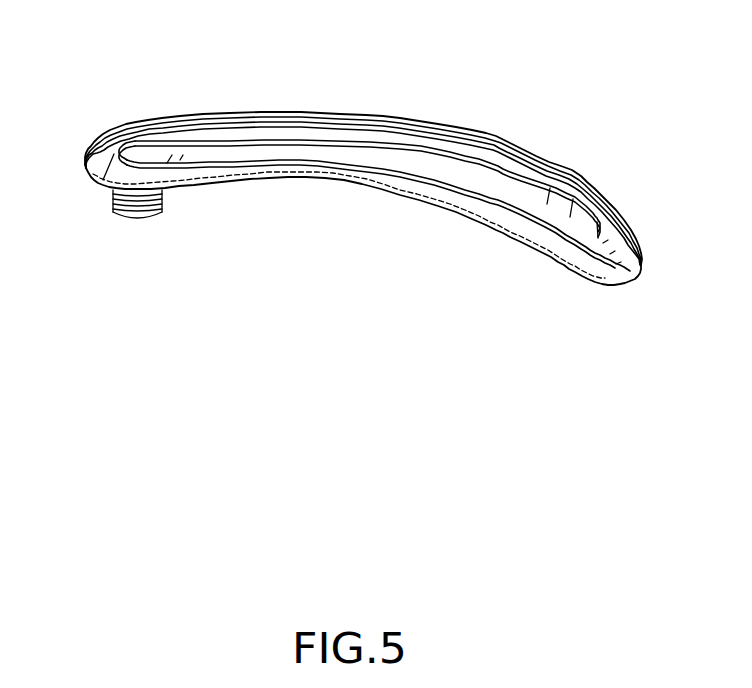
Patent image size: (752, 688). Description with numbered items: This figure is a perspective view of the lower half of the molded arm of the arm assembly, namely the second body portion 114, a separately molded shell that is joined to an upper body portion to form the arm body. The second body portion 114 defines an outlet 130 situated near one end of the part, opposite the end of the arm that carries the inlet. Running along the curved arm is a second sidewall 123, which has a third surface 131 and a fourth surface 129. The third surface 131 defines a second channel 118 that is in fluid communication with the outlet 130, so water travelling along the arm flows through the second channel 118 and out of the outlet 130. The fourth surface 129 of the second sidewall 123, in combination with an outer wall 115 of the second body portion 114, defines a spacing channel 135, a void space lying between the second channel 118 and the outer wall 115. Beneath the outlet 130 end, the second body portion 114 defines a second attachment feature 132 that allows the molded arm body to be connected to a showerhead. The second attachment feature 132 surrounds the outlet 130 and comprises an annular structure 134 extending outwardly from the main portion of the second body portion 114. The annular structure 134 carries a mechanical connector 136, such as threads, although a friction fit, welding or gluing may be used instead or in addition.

The second body portion 114 is at (143, 78).
The outer wall 115 is at (592, 267).
The second channel 118 is at (448, 143).
The second sidewall 123 is at (502, 190).
The fourth surface 129 is at (323, 150).
The outlet 130 is at (145, 154).
The third surface 131 is at (240, 137).
The second attachment feature 132 is at (162, 211).
The annular structure 134 is at (113, 214).
The spacing channel 135 is at (622, 231).
The mechanical connector 136 is at (110, 205).